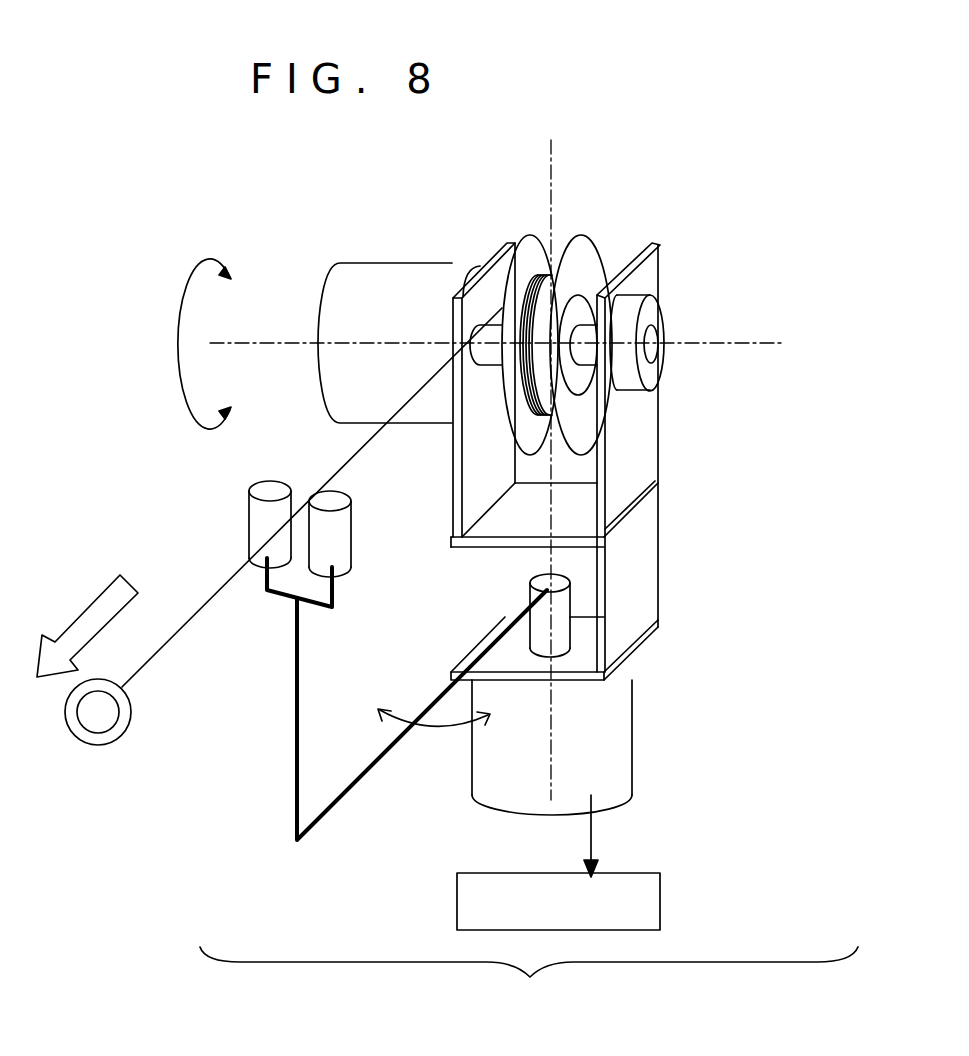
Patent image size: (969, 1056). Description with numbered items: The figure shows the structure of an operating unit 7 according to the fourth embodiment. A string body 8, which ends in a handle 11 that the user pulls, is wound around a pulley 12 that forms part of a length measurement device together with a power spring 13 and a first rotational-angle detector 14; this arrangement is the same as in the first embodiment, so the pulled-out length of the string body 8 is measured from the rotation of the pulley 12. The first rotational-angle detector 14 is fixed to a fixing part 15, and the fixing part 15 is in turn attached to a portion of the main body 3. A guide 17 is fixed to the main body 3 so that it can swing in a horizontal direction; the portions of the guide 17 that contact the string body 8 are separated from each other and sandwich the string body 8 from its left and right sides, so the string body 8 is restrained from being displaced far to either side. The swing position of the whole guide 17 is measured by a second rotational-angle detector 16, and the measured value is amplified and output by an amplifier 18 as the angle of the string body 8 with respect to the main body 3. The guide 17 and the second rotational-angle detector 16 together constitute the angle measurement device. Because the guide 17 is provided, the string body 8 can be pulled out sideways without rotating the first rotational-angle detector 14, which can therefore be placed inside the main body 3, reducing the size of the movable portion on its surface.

The main body 3 is at (625, 630).
The operating unit 7 is at (529, 984).
The string body 8 is at (181, 629).
The handle 11 is at (98, 722).
The pulley 12 is at (581, 242).
The power spring 13 is at (656, 313).
The first rotational-angle detector 14 is at (392, 304).
The fixing part 15 is at (634, 443).
The second rotational-angle detector 16 is at (610, 750).
The guide 17 is at (251, 513).
The amplifier 18 is at (558, 862).